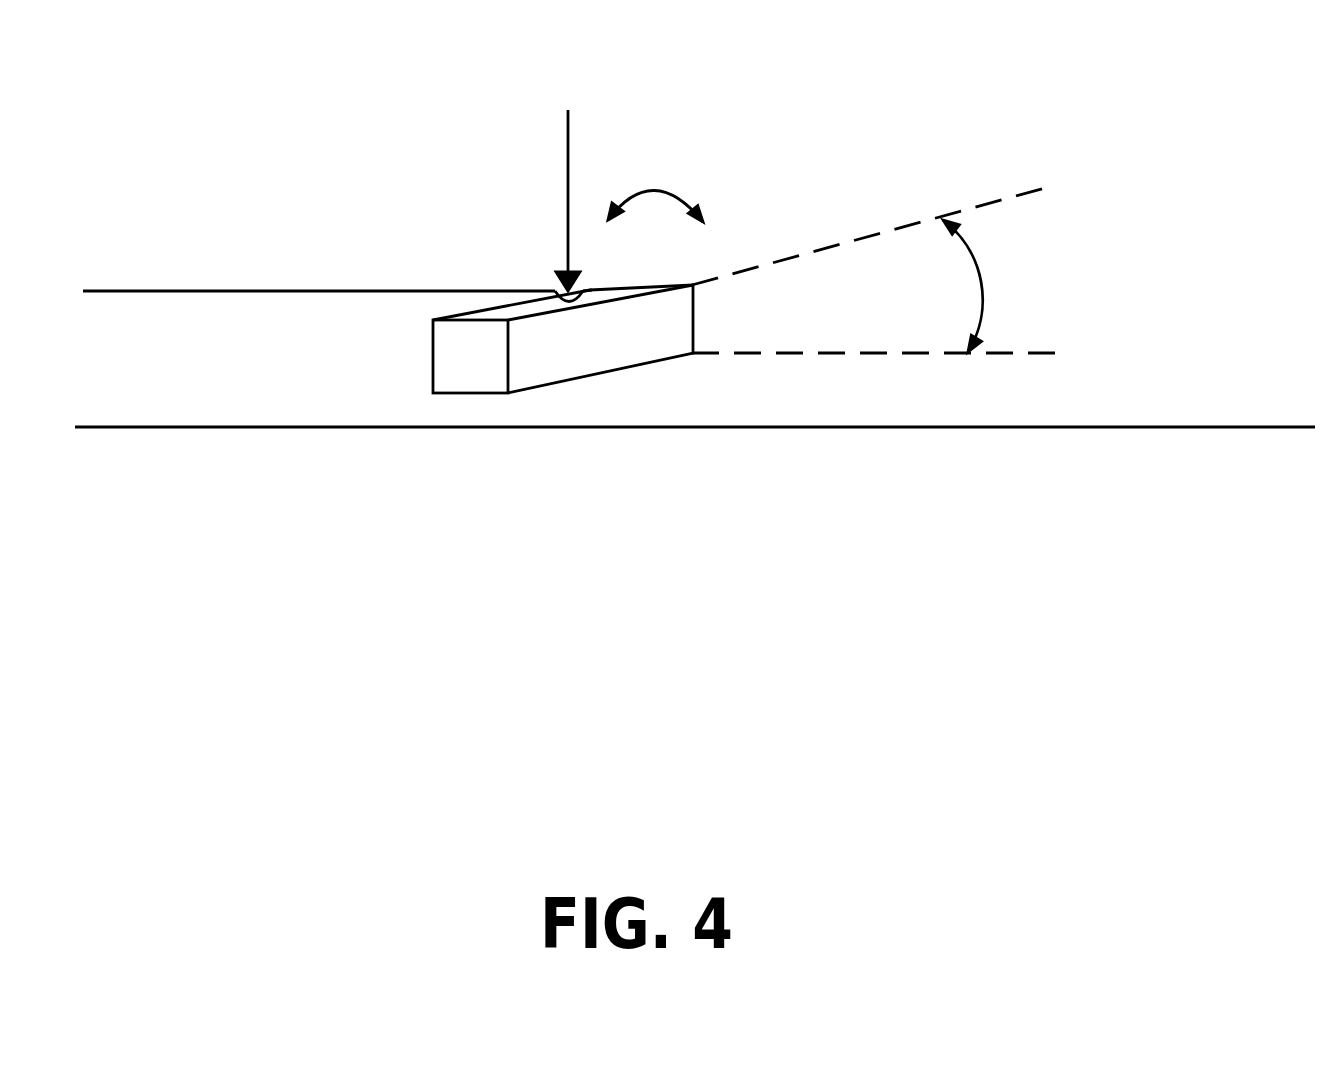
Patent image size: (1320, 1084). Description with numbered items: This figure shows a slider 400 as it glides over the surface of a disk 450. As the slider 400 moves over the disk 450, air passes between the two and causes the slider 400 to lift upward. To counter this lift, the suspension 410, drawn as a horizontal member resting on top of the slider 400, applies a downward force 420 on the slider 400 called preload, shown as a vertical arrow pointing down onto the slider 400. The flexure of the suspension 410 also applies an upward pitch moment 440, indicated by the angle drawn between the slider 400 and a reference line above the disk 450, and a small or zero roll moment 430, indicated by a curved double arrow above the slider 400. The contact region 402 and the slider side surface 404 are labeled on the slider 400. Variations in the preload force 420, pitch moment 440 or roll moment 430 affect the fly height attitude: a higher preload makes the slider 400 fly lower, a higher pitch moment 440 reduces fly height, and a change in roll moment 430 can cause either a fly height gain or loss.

The slider 400 is at (432, 352).
The dimple / pivot contact point 402 is at (597, 285).
The slider side surface 404 is at (660, 292).
The suspension 410 is at (284, 290).
The force 420 is at (568, 130).
The roll moment 430 is at (655, 190).
The pitch moment 440 is at (983, 273).
The disk 450 is at (1128, 430).